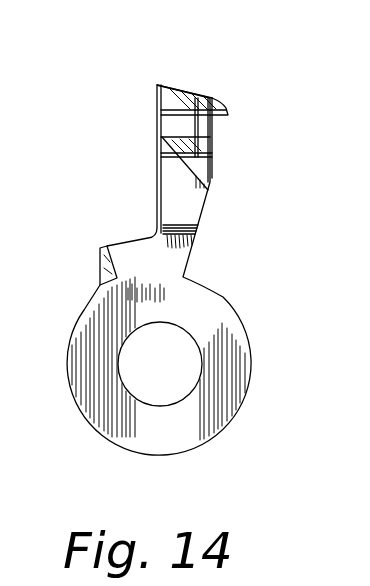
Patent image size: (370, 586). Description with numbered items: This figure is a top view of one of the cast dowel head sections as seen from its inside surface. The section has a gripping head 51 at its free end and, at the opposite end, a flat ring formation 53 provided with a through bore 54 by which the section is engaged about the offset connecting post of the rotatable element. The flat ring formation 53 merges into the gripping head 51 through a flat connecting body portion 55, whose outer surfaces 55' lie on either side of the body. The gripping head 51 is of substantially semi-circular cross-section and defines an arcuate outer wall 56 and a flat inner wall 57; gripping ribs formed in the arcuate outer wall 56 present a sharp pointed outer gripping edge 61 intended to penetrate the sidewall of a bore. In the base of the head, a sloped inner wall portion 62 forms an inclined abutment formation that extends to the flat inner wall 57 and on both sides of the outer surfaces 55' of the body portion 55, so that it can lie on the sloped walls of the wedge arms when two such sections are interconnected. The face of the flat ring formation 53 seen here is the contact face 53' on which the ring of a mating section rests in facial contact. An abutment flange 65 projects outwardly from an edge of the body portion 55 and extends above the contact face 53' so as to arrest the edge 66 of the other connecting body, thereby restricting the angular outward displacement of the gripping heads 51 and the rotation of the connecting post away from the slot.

The gripping head 51 is at (205, 80).
The flat ring formation 53 is at (193, 270).
The contact face 53' is at (78, 364).
The through bore 54 is at (194, 346).
The flat connecting body portion 55 is at (232, 184).
The outer surfaces of the body portion 55' is at (113, 159).
The arcuate outer wall 56 is at (257, 140).
The flat inner wall 57 is at (133, 129).
The outer gripping edge 61 is at (228, 115).
The sloped inner wall portion 62 is at (183, 170).
The abutment flange 65 is at (100, 270).
The edge 66 is at (190, 247).